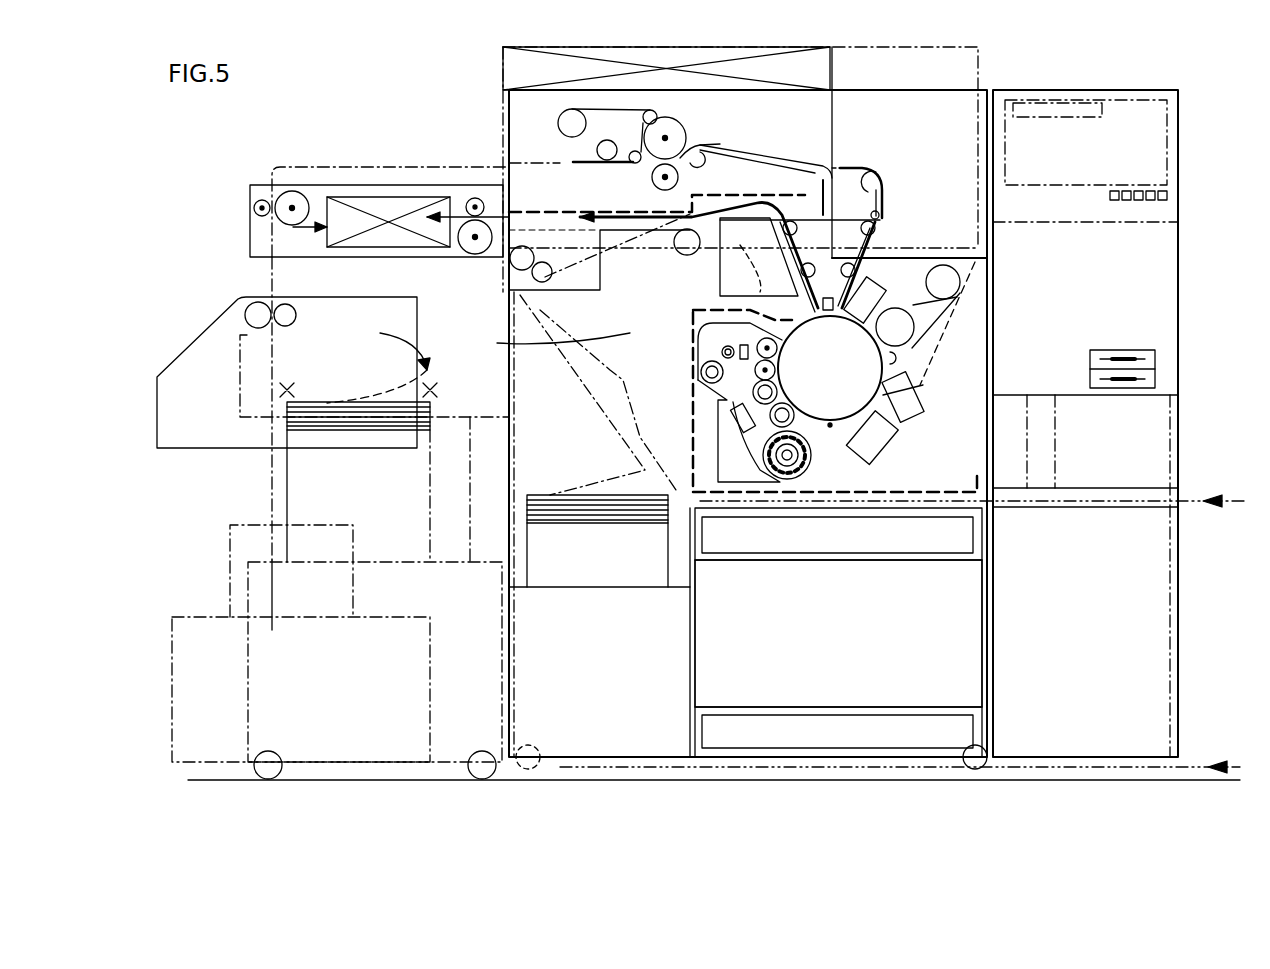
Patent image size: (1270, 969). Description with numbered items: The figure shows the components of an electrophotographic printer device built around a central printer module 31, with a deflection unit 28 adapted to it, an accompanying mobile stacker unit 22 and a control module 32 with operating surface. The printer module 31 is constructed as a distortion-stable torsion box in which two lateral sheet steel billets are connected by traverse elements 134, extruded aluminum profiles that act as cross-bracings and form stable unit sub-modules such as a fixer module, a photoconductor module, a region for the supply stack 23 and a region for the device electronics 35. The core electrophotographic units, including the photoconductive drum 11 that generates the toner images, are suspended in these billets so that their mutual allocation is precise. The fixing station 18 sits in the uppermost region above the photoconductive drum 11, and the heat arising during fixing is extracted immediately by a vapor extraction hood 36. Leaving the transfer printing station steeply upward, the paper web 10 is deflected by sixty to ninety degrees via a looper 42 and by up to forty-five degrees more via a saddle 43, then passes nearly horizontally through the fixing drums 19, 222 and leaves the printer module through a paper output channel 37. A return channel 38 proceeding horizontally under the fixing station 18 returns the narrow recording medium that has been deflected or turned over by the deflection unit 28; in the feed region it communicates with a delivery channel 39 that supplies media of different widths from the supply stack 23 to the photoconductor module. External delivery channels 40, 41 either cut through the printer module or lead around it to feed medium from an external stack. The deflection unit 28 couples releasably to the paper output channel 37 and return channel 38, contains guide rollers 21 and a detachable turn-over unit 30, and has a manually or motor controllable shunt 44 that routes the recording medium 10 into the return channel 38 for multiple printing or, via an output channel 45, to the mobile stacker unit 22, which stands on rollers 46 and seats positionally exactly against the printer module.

The paper web 10 is at (580, 420).
The photoconductive drum 11 is at (857, 380).
The fixing station 18 is at (765, 125).
The fixing drum 19 is at (683, 133).
The guide rollers 21 is at (253, 208).
The mobile stacker unit 22 is at (233, 490).
The supply stack 23 is at (672, 288).
The deflection unit 28 is at (259, 185).
The turn-over unit 30 is at (392, 200).
The printer module 31 is at (895, 42).
The control module 32 is at (1152, 170).
The device electronics 35 is at (805, 665).
The vapor extraction hood 36 is at (503, 62).
The paper output channel 37 is at (520, 175).
The return channel 38 is at (538, 232).
The delivery channel 39 is at (680, 252).
The external delivery channel 40 is at (1020, 508).
The external delivery channel 41 is at (1032, 755).
The looper 42 is at (882, 185).
The saddle 43 is at (780, 172).
The shunt 44 is at (272, 238).
The output channel 45 is at (272, 281).
The rollers 46 is at (270, 775).
The traverse elements 134 is at (640, 210).
The fixing drum 222 is at (258, 322).